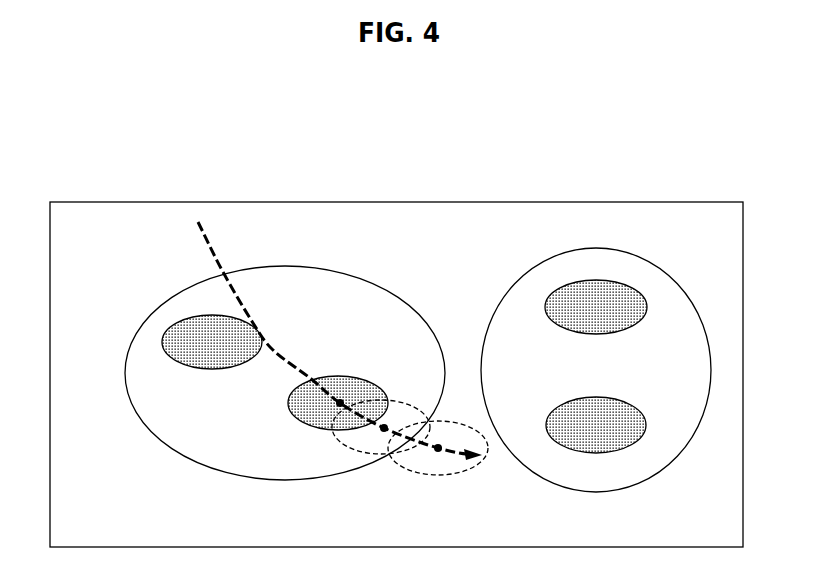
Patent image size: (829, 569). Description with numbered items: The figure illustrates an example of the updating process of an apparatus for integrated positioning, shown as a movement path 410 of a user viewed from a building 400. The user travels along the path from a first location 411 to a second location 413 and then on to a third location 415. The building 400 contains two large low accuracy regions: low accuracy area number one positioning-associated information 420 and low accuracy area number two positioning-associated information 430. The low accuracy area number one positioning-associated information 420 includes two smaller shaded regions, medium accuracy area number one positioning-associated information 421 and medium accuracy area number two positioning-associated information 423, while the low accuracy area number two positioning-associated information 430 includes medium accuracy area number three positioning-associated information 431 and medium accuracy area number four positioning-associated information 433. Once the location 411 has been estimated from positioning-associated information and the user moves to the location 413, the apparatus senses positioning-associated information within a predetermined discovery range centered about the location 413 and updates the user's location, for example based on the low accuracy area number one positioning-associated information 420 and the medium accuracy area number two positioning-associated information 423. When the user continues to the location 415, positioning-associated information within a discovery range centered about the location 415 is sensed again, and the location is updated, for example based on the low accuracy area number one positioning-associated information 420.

The building 400 is at (395, 201).
The movement path 410 is at (214, 252).
The location 411 is at (346, 407).
The location 413 is at (381, 433).
The location 415 is at (434, 456).
The low accuracy area #1 positioning-associated information 420 is at (283, 266).
The medium accuracy area #1 positioning-associated information 421 is at (212, 369).
The medium accuracy area #2 positioning-associated information 423 is at (338, 376).
The low accuracy area #2 positioning-associated information 430 is at (591, 248).
The medium accuracy area #3 positioning-associated information 431 is at (596, 335).
The medium accuracy area #4 positioning-associated information 433 is at (566, 398).